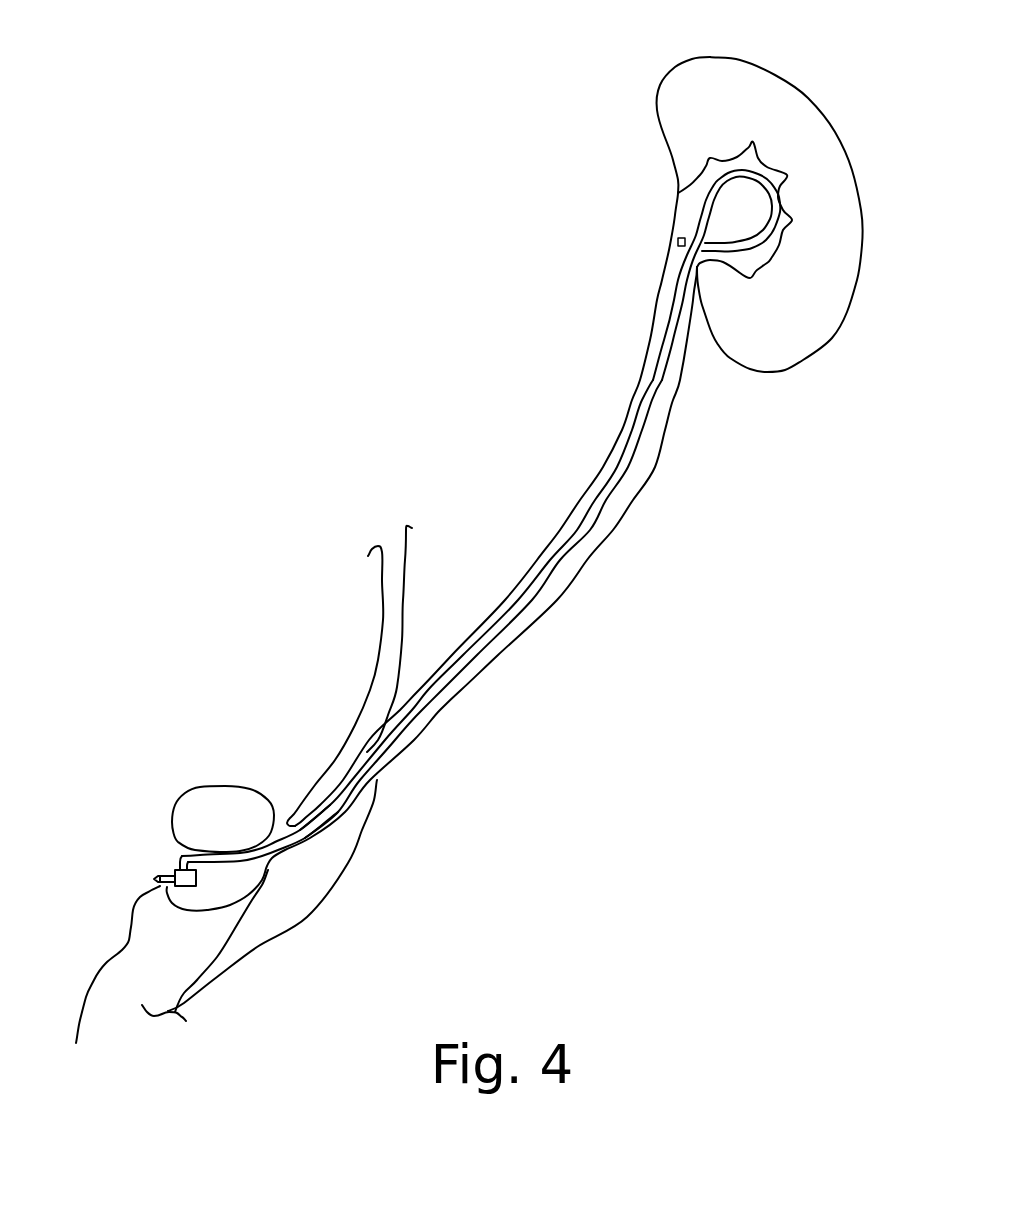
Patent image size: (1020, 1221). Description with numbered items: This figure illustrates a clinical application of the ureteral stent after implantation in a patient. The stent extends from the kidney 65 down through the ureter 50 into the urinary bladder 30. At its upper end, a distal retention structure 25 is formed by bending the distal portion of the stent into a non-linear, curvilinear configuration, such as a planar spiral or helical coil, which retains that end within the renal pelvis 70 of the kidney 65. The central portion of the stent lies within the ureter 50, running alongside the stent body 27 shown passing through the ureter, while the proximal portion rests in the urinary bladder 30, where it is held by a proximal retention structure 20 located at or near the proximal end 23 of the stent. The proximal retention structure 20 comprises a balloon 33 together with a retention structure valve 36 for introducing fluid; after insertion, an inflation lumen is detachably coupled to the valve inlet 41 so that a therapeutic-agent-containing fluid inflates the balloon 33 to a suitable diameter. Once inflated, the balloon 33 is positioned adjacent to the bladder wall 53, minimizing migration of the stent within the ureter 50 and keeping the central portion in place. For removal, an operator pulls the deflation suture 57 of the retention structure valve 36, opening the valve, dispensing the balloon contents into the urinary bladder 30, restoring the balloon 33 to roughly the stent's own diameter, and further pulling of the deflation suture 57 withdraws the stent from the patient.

The proximal retention structure 20 is at (223, 793).
The proximal end 23 is at (177, 856).
The distal retention structure 25 is at (705, 202).
The ureteral catheter 27 is at (575, 534).
The urinary bladder 30 is at (175, 947).
The balloon 33 is at (201, 806).
The retention structure valve 36 is at (178, 866).
The valve inlet 41 is at (172, 873).
The ureter 50 is at (665, 421).
The bladder wall 53 is at (247, 927).
The deflation suture 57 is at (72, 1033).
The kidney 65 is at (712, 55).
The renal pelvis 70 is at (696, 225).